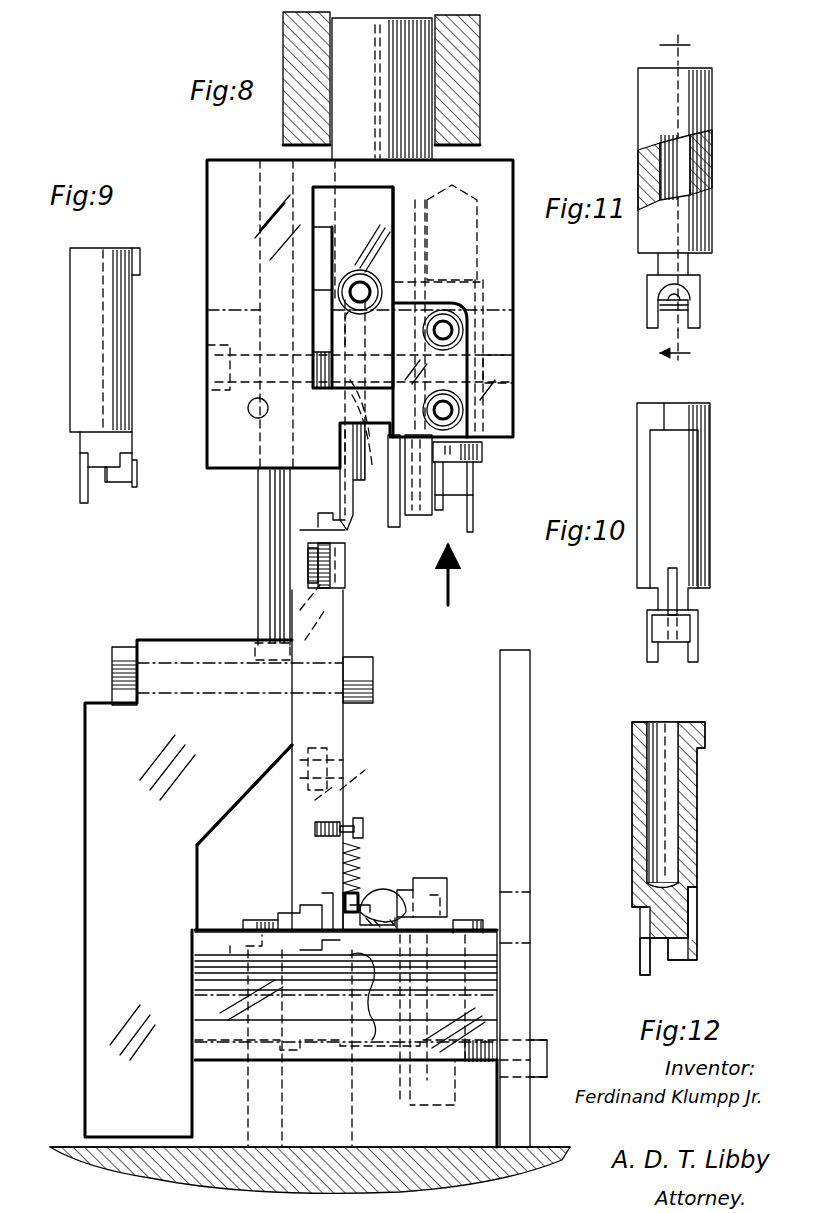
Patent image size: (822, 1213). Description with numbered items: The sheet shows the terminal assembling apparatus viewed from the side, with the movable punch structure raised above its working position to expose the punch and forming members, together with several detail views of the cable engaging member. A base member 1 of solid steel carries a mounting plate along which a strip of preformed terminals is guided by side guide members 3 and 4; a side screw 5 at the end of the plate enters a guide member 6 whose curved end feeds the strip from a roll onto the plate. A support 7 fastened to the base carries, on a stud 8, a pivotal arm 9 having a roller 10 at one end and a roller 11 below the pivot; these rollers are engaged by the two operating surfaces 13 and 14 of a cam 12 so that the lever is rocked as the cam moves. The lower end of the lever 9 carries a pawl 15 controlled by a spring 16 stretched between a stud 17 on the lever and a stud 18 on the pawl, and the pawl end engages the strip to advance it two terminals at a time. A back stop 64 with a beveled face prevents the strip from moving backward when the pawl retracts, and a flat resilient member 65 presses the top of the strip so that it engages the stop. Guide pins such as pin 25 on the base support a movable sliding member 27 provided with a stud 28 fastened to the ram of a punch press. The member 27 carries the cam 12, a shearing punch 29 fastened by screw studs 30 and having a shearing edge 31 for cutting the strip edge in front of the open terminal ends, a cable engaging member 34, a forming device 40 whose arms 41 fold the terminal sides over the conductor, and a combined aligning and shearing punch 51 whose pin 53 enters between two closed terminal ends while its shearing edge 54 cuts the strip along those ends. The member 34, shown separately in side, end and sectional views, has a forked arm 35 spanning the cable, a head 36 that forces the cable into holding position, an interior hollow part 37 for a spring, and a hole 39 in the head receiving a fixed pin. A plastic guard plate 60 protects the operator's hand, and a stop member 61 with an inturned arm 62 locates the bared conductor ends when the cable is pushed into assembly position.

In FIG. 8, the base member 1 is at (482, 1135).
In FIG. 8, the side guide member 3 is at (420, 928).
In FIG. 8, the side guide member 4 is at (320, 917).
In FIG. 8, the side screw 5 is at (250, 915).
In FIG. 8, the guide member 6 is at (472, 993).
In FIG. 8, the support 7 is at (88, 815).
In FIG. 8, the stud 8 is at (375, 692).
In FIG. 8, the pivotal arm 9 is at (345, 745).
In FIG. 8, the roller 10 is at (325, 570).
In FIG. 8, the roller 11 is at (350, 782).
In FIG. 8, the cam 12 is at (345, 250).
In FIG. 11, the cam 12 is at (692, 197).
In FIG. 8, the operating surface 13 is at (320, 277).
In FIG. 8, the operating surface 14 is at (320, 368).
In FIG. 8, the pawl 15 is at (330, 920).
In FIG. 8, the spring 16 is at (362, 862).
In FIG. 8, the stud 17 is at (365, 828).
In FIG. 8, the stud 18 is at (370, 895).
In FIG. 8, the guide pin 25 is at (258, 578).
In FIG. 8, the movable sliding member 27 is at (505, 345).
In FIG. 8, the stud 28 is at (415, 105).
In FIG. 8, the shearing punch 29 is at (432, 525).
In FIG. 8, the screw stud 30 is at (462, 330).
In FIG. 8, the shearing edge 31 is at (440, 532).
In FIG. 8, the cable engaging member 34 is at (485, 452).
In FIG. 9, the cable engaging member 34 is at (70, 380).
In FIG. 11, the cable engaging member 34 is at (712, 122).
In FIG. 10, the cable engaging member 34 is at (712, 500).
In FIG. 12, the cable engaging member 34 is at (705, 822).
In FIG. 8, the forked arm 35 is at (470, 512).
In FIG. 9, the forked arm 35 is at (80, 493).
In FIG. 11, the forked arm 35 is at (700, 300).
In FIG. 10, the forked arm 35 is at (647, 640).
In FIG. 12, the forked arm 35 is at (640, 962).
In FIG. 9, the head 36 is at (112, 482).
In FIG. 11, the head 36 is at (692, 313).
In FIG. 10, the head 36 is at (670, 645).
In FIG. 12, the head 36 is at (680, 960).
In FIG. 11, the interior hollow part 37 is at (715, 165).
In FIG. 12, the interior hollow part 37 is at (668, 725).
In FIG. 10, the hole 39 is at (678, 583).
In FIG. 12, the hole 39 is at (698, 925).
In FIG. 8, the forming device 40 is at (390, 512).
In FIG. 8, the arm 41 is at (421, 485).
In FIG. 8, the combined aligning and shearing punch 51 is at (352, 443).
In FIG. 8, the pin 53 is at (318, 522).
In FIG. 8, the shearing edge 54 is at (300, 528).
In FIG. 8, the guard plate 60 is at (532, 733).
In FIG. 8, the stop member 61 is at (384, 893).
In FIG. 8, the inturned arm 62 is at (380, 900).
In FIG. 8, the back stop 64 is at (347, 996).
In FIG. 8, the flat resilient member 65 is at (410, 905).